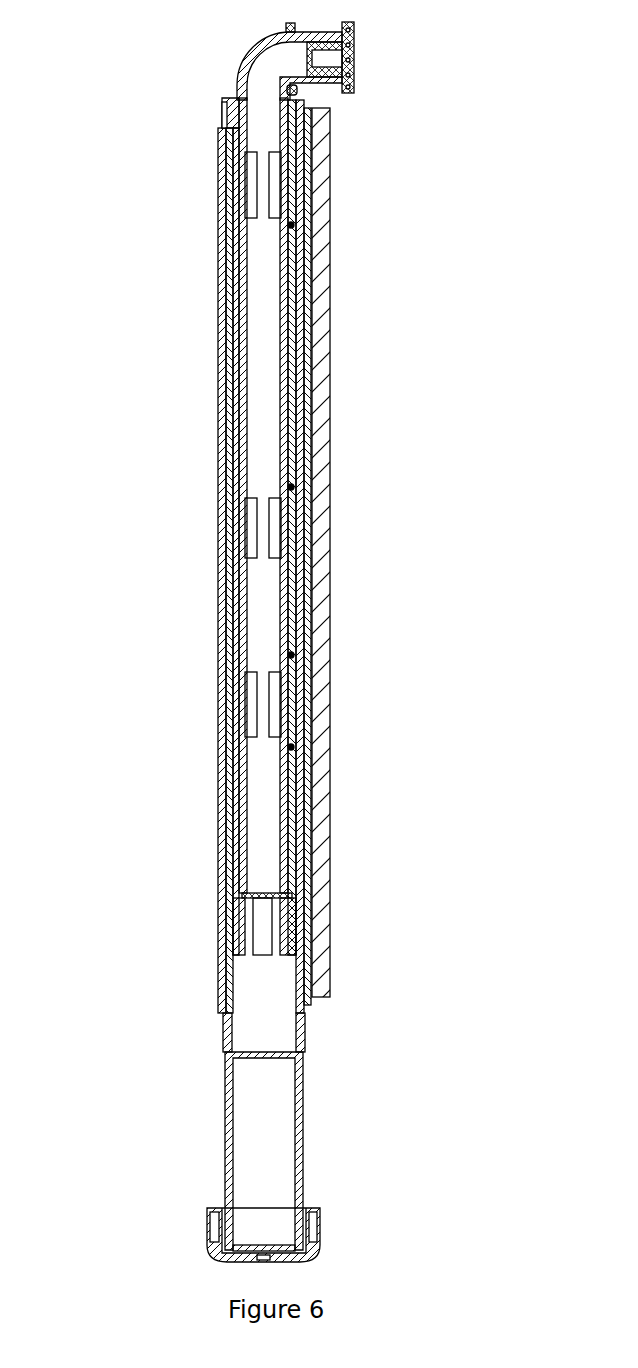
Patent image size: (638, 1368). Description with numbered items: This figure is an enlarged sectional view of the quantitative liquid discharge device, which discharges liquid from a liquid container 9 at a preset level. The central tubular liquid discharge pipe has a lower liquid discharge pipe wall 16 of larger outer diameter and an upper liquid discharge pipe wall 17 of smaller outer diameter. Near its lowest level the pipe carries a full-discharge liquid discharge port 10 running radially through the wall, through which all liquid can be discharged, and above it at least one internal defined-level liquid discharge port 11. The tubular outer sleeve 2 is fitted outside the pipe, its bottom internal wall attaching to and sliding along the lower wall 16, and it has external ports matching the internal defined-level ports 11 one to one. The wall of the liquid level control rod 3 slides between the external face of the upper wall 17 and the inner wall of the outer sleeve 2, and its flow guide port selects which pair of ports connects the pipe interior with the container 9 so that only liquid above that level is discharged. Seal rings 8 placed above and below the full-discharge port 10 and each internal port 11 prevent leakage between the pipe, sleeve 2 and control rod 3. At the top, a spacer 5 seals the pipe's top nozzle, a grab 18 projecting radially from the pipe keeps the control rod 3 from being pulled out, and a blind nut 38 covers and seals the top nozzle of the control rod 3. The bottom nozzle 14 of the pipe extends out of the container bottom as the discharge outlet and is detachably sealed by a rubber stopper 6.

The outer sleeve 2 is at (218, 548).
The liquid level control rod 3 is at (225, 1078).
The spacer 5 is at (263, 895).
The rubber stopper 6 is at (367, 67).
The seal ring 8 is at (218, 140).
The liquid container 9 is at (318, 365).
The full-discharge liquid discharge port 10 is at (240, 183).
The internal defined-level liquid discharge port 11 is at (312, 527).
The bottom nozzle 14 is at (273, 62).
The lower liquid discharge pipe wall 16 is at (220, 275).
The upper liquid discharge pipe wall 17 is at (220, 368).
The grab 18 is at (310, 937).
The blind nut 38 is at (323, 1232).